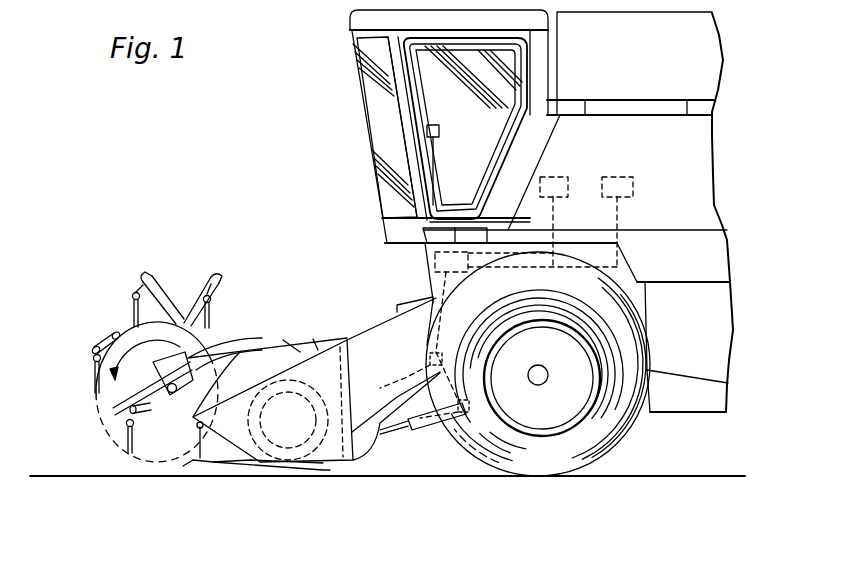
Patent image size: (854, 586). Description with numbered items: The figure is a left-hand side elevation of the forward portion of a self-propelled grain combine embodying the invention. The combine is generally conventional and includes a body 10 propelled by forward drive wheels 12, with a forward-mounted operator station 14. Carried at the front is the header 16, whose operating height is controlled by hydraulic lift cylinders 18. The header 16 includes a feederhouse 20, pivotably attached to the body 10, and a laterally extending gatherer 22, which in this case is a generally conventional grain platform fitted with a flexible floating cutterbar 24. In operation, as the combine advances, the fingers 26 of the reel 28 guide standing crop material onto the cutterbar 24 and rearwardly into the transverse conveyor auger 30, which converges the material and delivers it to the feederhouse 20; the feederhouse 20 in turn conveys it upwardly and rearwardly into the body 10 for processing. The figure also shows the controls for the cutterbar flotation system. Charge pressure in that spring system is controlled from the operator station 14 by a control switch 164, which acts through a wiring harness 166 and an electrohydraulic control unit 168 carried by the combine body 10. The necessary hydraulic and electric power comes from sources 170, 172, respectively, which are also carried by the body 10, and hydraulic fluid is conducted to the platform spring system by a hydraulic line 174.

The body 10 is at (720, 175).
The forward drive wheels 12 is at (636, 420).
The operator station 14 is at (378, 106).
The header 16 is at (311, 322).
The hydraulic lift cylinders 18 is at (414, 426).
The feederhouse 20 is at (367, 330).
The gatherer 22 is at (187, 296).
The flexible floating cutterbar 24 is at (184, 467).
The fingers 26 is at (93, 377).
The reel 28 is at (102, 323).
The transverse conveyor auger 30 is at (248, 471).
The control switch 164 is at (439, 130).
The wiring harness 166 is at (434, 154).
The electrohydraulic control unit 168 is at (434, 263).
The hydraulic power source 170 is at (575, 176).
The electric power source 172 is at (620, 176).
The hydraulic line 174 is at (408, 370).